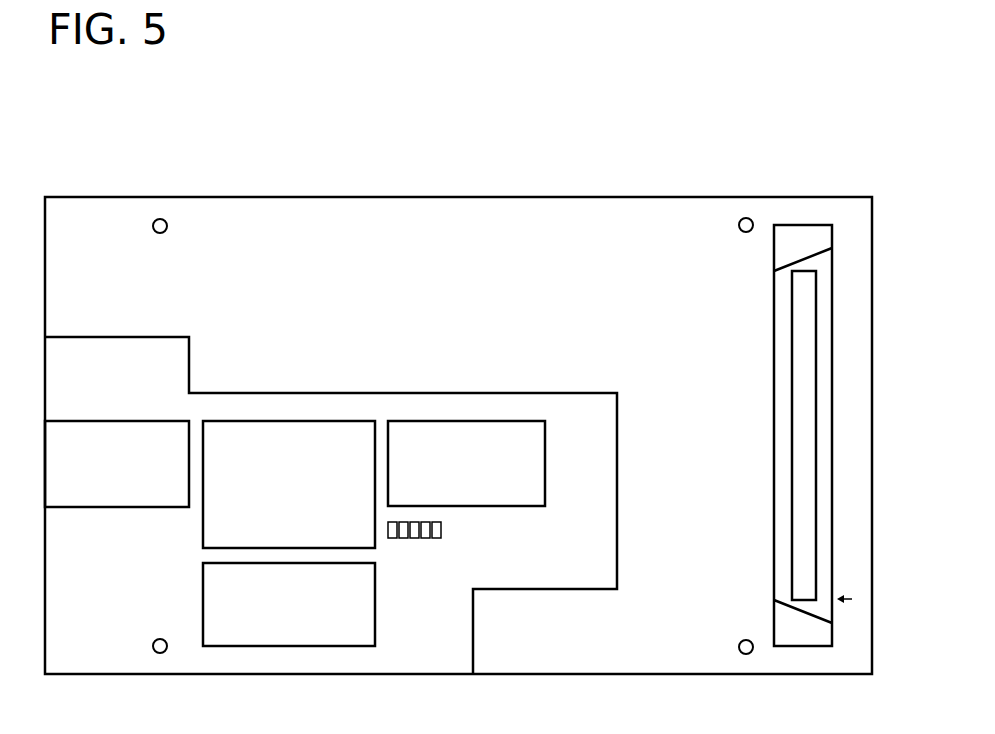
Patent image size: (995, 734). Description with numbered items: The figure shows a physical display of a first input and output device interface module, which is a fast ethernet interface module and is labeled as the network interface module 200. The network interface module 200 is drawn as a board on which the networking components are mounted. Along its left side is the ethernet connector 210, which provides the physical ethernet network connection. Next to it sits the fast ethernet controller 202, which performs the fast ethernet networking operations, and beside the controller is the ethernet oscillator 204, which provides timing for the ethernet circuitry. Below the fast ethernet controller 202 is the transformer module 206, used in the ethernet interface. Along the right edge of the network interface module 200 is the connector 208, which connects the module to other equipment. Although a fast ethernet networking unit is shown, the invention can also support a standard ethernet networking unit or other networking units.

The network interface module 1 200 is at (420, 196).
The fast ethernet controller 202 is at (270, 421).
The ethernet oscillator 204 is at (447, 421).
The transformer module 206 is at (280, 647).
The connector 208 is at (812, 250).
The ethernet connector 210 is at (77, 420).